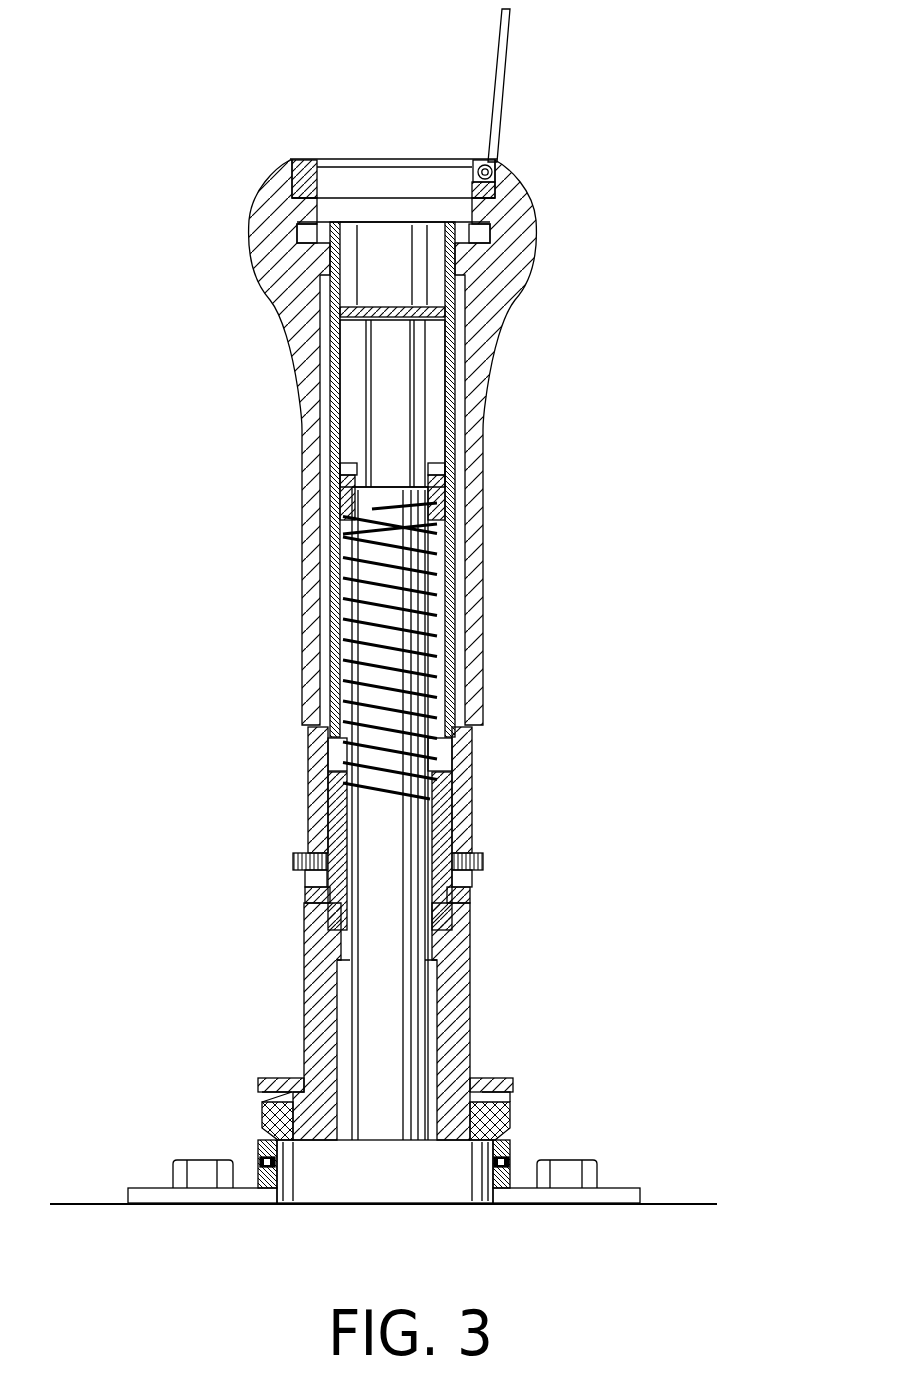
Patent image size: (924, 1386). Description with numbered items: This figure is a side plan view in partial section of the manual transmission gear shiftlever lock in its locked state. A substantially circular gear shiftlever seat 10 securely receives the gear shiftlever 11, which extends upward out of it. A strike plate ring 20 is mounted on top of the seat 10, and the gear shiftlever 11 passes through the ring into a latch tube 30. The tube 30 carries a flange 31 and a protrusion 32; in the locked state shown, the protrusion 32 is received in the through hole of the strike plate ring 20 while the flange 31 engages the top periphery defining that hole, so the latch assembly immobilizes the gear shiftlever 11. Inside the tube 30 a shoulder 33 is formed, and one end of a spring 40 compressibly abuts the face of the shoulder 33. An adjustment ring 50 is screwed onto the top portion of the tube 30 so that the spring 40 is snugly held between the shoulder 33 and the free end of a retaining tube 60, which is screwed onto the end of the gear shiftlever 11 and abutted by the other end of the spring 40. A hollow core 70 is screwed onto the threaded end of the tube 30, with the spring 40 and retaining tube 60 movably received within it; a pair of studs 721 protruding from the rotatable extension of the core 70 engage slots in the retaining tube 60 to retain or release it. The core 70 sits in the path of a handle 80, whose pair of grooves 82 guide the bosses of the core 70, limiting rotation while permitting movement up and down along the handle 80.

The gear shiftlever seat 10 is at (342, 1187).
The gear shiftlever 11 is at (367, 990).
The strike plate ring 20 is at (510, 1125).
The tube 30 is at (470, 980).
The flange 31 is at (500, 1082).
The protrusion 32 is at (307, 1118).
The shoulder 33 is at (443, 790).
The spring 40 is at (428, 659).
The adjustment ring 50 is at (467, 893).
The retaining tube 60 is at (440, 493).
The hollow core 70 is at (472, 745).
The studs 721 is at (432, 462).
The handle 80 is at (515, 298).
The grooves 82 is at (457, 589).